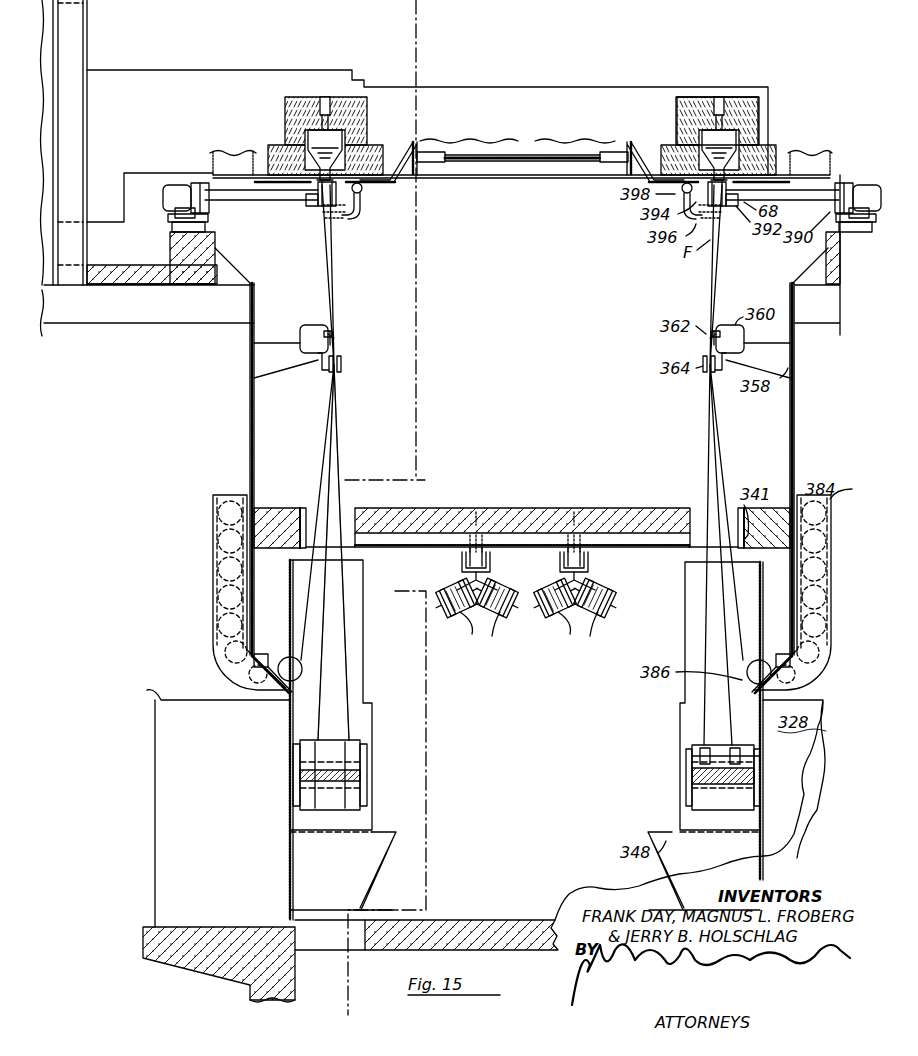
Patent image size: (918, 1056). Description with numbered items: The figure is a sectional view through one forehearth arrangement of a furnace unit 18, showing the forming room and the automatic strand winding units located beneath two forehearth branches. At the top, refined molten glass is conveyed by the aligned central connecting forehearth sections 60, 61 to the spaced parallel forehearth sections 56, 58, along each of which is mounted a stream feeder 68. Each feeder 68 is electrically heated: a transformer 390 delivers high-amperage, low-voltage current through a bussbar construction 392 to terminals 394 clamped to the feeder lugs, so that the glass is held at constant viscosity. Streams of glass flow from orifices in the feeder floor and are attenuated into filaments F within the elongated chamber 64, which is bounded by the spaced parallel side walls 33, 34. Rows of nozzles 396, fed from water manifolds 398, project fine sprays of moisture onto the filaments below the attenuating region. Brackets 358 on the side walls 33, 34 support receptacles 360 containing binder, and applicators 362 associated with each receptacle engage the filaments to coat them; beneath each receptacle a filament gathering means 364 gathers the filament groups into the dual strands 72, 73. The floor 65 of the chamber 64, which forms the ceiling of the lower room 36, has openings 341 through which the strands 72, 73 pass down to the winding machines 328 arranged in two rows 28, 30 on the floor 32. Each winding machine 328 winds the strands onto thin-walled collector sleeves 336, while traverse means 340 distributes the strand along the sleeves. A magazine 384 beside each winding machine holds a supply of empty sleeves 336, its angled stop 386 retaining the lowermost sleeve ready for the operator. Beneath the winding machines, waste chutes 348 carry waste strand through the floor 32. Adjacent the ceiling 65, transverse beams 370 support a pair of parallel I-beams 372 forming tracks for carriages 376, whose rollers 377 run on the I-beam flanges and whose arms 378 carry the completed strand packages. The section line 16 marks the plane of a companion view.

The furnace unit 18 is at (178, 61).
The central connecting forehearth section 61 is at (561, 81).
The forehearth section 56 is at (284, 112).
The forehearth section 58 is at (676, 112).
The central connecting forehearth section 60 is at (145, 195).
The transformer 390 is at (168, 210).
The stream feeder 68 is at (300, 202).
The bussbar construction 392 is at (310, 206).
The manifold 398 is at (366, 192).
The terminal 394 is at (358, 202).
The nozzle 396 is at (345, 222).
The filaments F is at (332, 240).
The chamber 64 is at (556, 293).
The receptacle 360 is at (303, 325).
The applicator 362 is at (338, 334).
The filament gathering means 364 is at (341, 366).
The bracket 358 is at (256, 368).
The side wall 33 is at (268, 421).
The side wall 34 is at (782, 421).
The strand 72 is at (329, 458).
The strand 73 is at (338, 460).
The magazine 384 is at (214, 499).
The opening 341 is at (300, 540).
The collector sleeve 336 is at (213, 536).
The roller 377 is at (470, 548).
The I-beam 372 is at (478, 548).
The floor 65 is at (533, 525).
The carriage 376 is at (460, 561).
The beam 370 is at (642, 548).
The arm 378 is at (428, 607).
The stop 386 is at (304, 680).
The winding machine 328 is at (195, 688).
The row of winding machines 28 is at (384, 749).
The row of winding machines 30 is at (672, 758).
The traverse means 340 is at (704, 751).
The waste chute 348 is at (372, 868).
The room 36 is at (556, 693).
The floor 32 is at (480, 918).
The section line 16 is at (348, 1012).